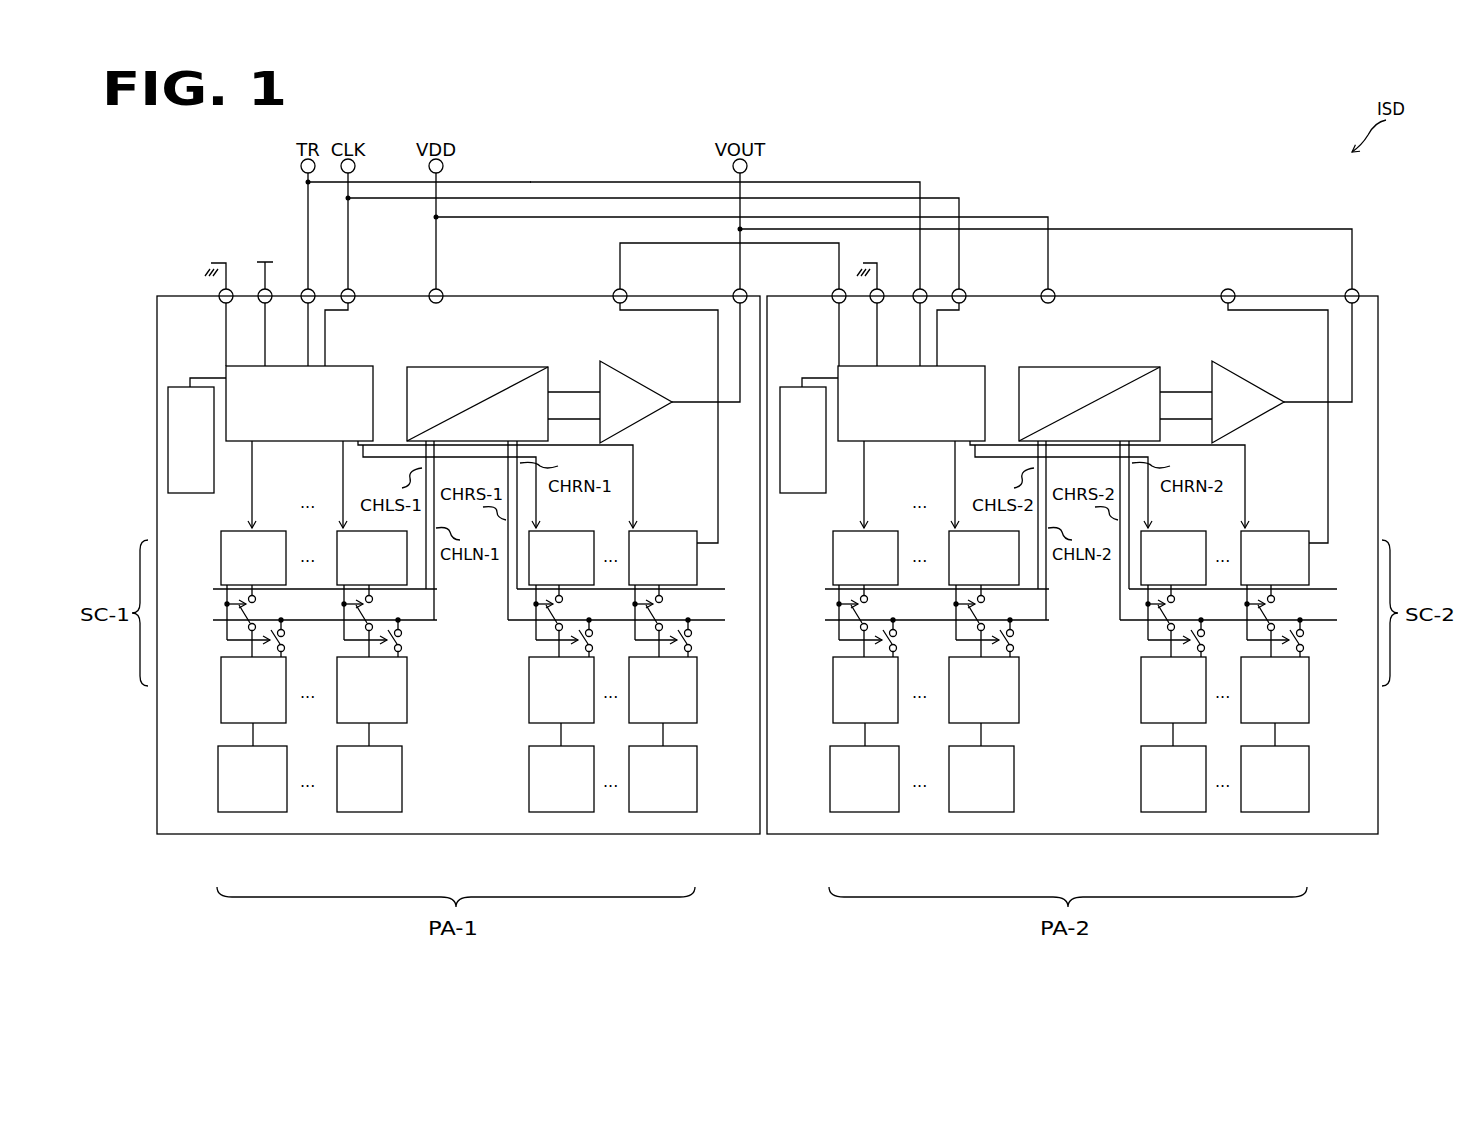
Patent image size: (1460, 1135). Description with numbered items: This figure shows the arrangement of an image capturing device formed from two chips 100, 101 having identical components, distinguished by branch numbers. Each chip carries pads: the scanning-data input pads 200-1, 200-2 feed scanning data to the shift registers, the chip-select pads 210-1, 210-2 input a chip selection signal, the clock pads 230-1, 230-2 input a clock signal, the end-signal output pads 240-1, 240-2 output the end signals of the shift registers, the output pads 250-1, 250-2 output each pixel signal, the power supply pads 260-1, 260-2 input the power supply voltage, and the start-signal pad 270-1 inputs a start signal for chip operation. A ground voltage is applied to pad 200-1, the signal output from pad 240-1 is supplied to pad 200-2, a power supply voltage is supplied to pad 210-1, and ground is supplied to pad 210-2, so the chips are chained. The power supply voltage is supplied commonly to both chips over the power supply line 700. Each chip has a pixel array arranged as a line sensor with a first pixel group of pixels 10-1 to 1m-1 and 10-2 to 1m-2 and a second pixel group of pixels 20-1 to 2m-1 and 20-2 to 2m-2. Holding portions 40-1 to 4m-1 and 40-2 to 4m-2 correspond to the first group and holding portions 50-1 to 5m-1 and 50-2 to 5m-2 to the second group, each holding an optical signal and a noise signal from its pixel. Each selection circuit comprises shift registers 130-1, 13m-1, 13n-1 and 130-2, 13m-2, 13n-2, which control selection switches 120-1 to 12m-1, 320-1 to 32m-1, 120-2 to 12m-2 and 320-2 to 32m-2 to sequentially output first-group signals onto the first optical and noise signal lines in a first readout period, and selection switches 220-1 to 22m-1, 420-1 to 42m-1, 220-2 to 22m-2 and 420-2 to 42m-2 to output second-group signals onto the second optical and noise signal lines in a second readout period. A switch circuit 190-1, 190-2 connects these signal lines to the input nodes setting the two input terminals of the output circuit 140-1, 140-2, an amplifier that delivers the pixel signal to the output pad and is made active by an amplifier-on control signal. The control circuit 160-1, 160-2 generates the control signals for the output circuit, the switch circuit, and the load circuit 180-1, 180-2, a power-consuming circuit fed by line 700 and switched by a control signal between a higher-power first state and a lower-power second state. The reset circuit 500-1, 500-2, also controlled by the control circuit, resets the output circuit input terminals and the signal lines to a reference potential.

The chip 100 is at (500, 296).
The chip 101 is at (1130, 296).
The power supply line 700 is at (537, 220).
The pad 200-1 is at (222, 289).
The pad 210-1 is at (262, 289).
The pad 270-1 is at (305, 289).
The pad 230-1 is at (351, 289).
The pad 260-1 is at (440, 289).
The pad 240-1 is at (614, 292).
The pad 250-1 is at (735, 292).
The control circuit 160-1 is at (373, 398).
The reset circuit 500-1 is at (453, 366).
The switch circuit 190-1 is at (551, 381).
The output circuit 140-1 is at (643, 422).
The load circuit 180-1 is at (196, 494).
The shift register 130-1 is at (221, 547).
The shift register 13m-1 is at (372, 558).
The shift register 13n-1 is at (652, 535).
The selection switch 120-1 is at (240, 625).
The selection switch 12m-1 is at (374, 600).
The selection switch 320-1 is at (302, 648).
The selection switch 32m-1 is at (404, 648).
The selection switch 220-1 is at (550, 627).
The selection switch 22m-1 is at (665, 600).
The selection switch 420-1 is at (578, 647).
The selection switch 42m-1 is at (692, 648).
The holding portion 40-1 is at (221, 705).
The holding portion 4m-1 is at (407, 706).
The holding portion 50-1 is at (529, 710).
The holding portion 5m-1 is at (697, 710).
The pixel 10-1 is at (233, 812).
The pixel 1m-1 is at (356, 812).
The pixel 20-1 is at (560, 812).
The pixel 2m-1 is at (660, 812).
The pad 200-2 is at (814, 310).
The pad 210-2 is at (885, 302).
The pad 230-2 is at (981, 303).
The pad 260-2 is at (1078, 272).
The pad 240-2 is at (1245, 401).
The pad 250-2 is at (1321, 329).
The control circuit 160-2 is at (1041, 434).
The reset circuit 500-2 is at (1089, 479).
The switch circuit 190-2 is at (1188, 378).
The output circuit 140-2 is at (1258, 411).
The load circuit 180-2 is at (807, 458).
The shift register 130-2 is at (840, 558).
The shift register 13m-2 is at (984, 558).
The shift register 13n-2 is at (1305, 558).
The selection switch 120-2 is at (824, 621).
The selection switch 12m-2 is at (1028, 621).
The selection switch 320-2 is at (892, 649).
The selection switch 32m-2 is at (1012, 652).
The selection switch 220-2 is at (1128, 621).
The selection switch 22m-2 is at (1299, 621).
The selection switch 420-2 is at (1146, 653).
The selection switch 42m-2 is at (1303, 653).
The holding portion 40-2 is at (842, 700).
The holding portion 4m-2 is at (1002, 697).
The holding portion 50-2 is at (1154, 700).
The holding portion 5m-2 is at (1297, 700).
The pixel 10-2 is at (861, 798).
The pixel 1m-2 is at (979, 798).
The pixel 20-2 is at (1173, 798).
The pixel 2m-2 is at (1275, 798).